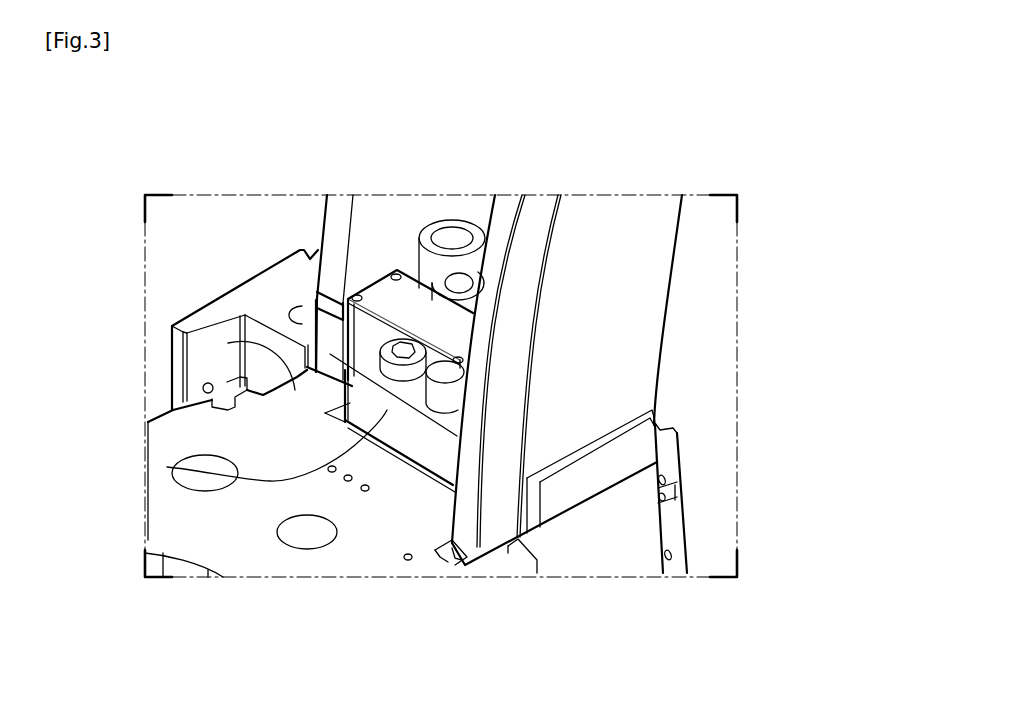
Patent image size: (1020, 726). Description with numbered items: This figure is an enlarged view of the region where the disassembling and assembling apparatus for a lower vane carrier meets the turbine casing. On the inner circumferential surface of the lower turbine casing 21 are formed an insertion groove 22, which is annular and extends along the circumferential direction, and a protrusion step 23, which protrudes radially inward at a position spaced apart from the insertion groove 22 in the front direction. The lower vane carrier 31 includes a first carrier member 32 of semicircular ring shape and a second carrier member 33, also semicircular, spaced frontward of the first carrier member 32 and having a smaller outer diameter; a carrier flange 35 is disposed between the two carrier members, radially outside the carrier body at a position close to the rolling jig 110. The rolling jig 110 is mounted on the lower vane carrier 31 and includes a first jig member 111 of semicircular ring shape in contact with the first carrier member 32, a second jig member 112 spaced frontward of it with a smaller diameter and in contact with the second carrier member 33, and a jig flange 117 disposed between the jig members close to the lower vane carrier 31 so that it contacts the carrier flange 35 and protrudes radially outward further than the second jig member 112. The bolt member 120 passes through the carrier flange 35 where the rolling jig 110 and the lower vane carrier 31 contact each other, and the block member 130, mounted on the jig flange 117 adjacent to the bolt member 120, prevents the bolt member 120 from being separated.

The lower turbine casing 21 is at (200, 545).
The insertion groove 22 is at (458, 557).
The protrusion step 23 is at (228, 343).
The lower vane carrier 31 is at (692, 532).
The first carrier member 32 is at (598, 557).
The second carrier member 33 is at (262, 290).
The carrier flange 35 is at (408, 455).
The rolling jig 110 is at (680, 276).
The first jig member 111 is at (608, 221).
The second jig member 112 is at (337, 208).
The jig flange 117 is at (167, 467).
The bolt member 120 is at (388, 374).
The block member 130 is at (387, 274).